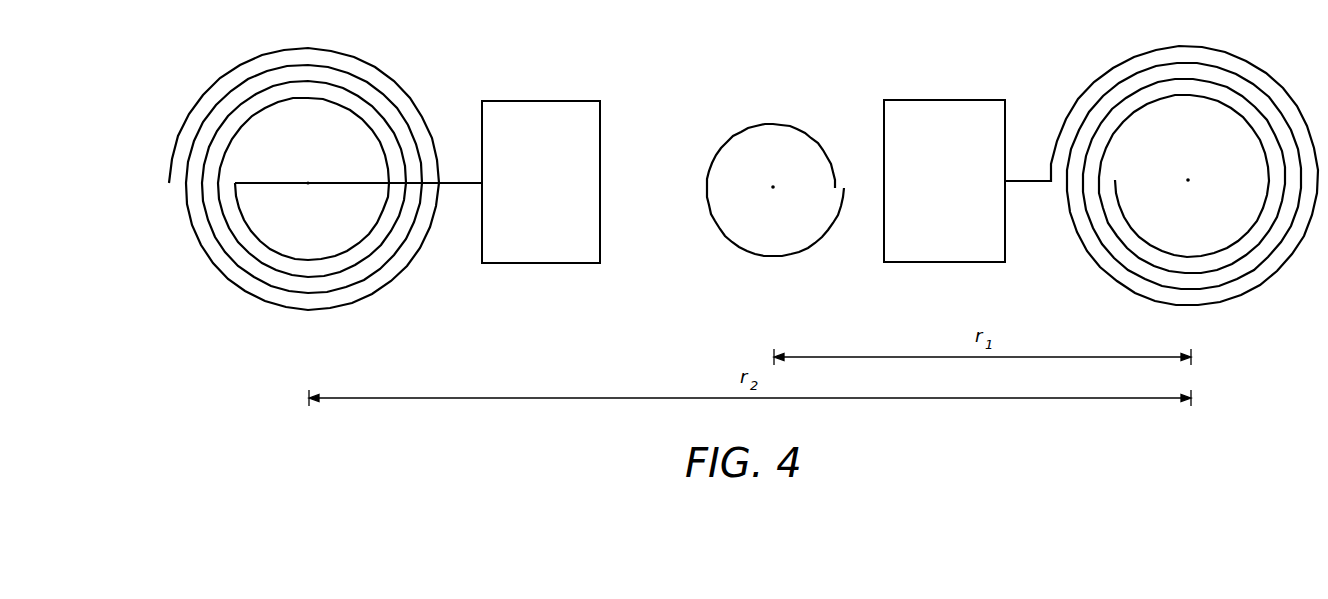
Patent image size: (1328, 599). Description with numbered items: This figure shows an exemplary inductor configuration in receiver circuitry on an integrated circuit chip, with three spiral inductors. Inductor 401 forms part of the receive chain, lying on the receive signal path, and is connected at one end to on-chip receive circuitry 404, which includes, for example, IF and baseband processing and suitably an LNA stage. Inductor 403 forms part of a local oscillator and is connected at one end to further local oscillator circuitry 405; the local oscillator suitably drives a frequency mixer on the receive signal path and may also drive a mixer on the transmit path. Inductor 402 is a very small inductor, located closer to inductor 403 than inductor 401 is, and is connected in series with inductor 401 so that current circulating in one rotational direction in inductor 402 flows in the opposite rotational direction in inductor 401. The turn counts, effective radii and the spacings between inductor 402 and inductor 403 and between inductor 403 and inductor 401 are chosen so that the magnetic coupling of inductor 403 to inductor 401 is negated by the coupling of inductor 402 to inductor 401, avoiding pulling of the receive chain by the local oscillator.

The inductor 401 is at (384, 73).
The inductor 402 is at (770, 121).
The inductor 403 is at (1263, 75).
The receive circuitry 404 is at (572, 101).
The local oscillator circuitry 405 is at (975, 100).